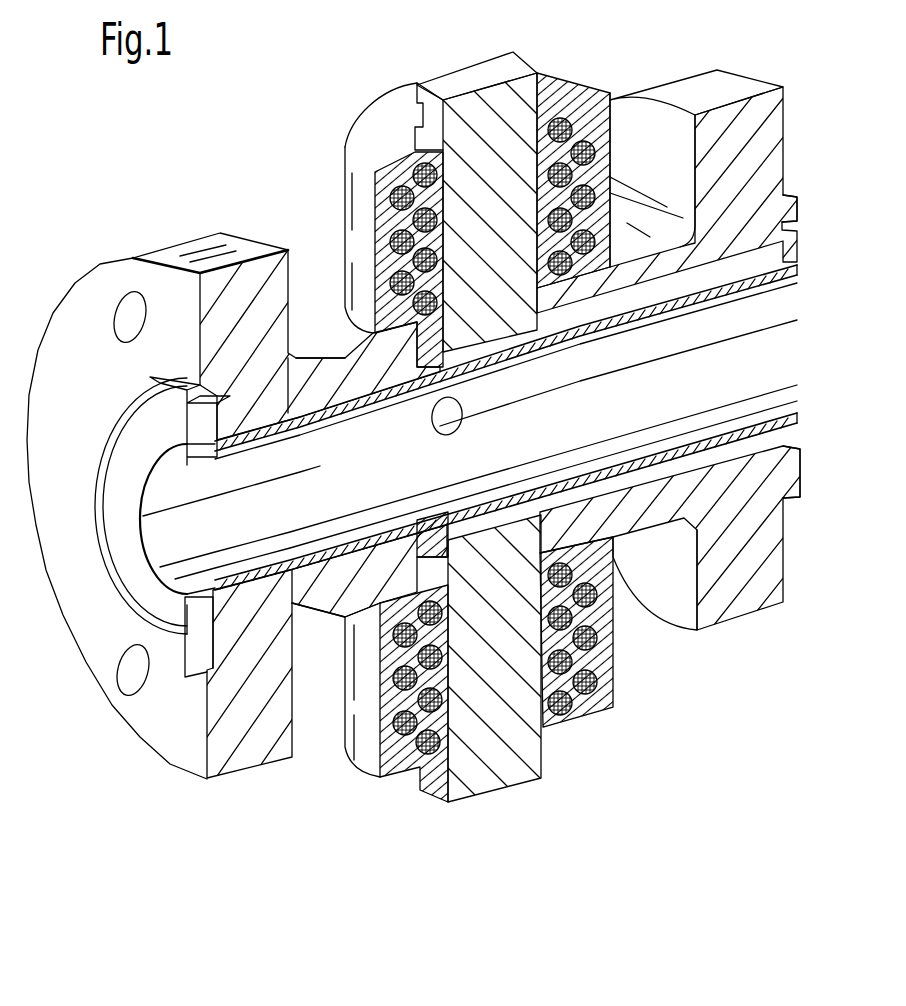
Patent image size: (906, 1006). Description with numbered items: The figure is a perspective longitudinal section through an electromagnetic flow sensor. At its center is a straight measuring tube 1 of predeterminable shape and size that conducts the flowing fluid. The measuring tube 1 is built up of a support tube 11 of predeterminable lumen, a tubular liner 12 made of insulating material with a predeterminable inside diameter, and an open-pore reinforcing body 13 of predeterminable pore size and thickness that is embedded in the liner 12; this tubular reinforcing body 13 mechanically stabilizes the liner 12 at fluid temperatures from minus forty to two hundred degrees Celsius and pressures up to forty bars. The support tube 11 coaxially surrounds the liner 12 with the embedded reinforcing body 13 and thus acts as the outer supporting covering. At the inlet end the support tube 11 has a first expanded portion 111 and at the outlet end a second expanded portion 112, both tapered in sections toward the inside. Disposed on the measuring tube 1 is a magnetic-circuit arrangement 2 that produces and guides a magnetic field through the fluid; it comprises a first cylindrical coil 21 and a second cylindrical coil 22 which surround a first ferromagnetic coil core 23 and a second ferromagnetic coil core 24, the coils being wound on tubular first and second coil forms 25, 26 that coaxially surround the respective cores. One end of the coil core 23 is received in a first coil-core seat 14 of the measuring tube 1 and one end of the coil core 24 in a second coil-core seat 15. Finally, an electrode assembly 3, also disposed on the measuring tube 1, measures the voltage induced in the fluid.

The measuring tube 1 is at (87, 248).
The support tube 11 is at (213, 753).
The first expanded portion 111 is at (243, 627).
The second expanded portion 112 is at (748, 425).
The tubular liner 12 is at (752, 405).
The open-pore reinforcing body 13 is at (765, 433).
The first coil-core seat 14 is at (560, 350).
The second coil-core seat 15 is at (548, 487).
The magnetic-circuit arrangement 2 is at (560, 772).
The first cylindrical coil 21 is at (390, 193).
The second cylindrical coil 22 is at (420, 777).
The first ferromagnetic coil core 23 is at (478, 108).
The second ferromagnetic coil core 24 is at (478, 773).
The first coil form 25 is at (592, 112).
The second coil form 26 is at (612, 705).
The electrode assembly 3 is at (418, 441).